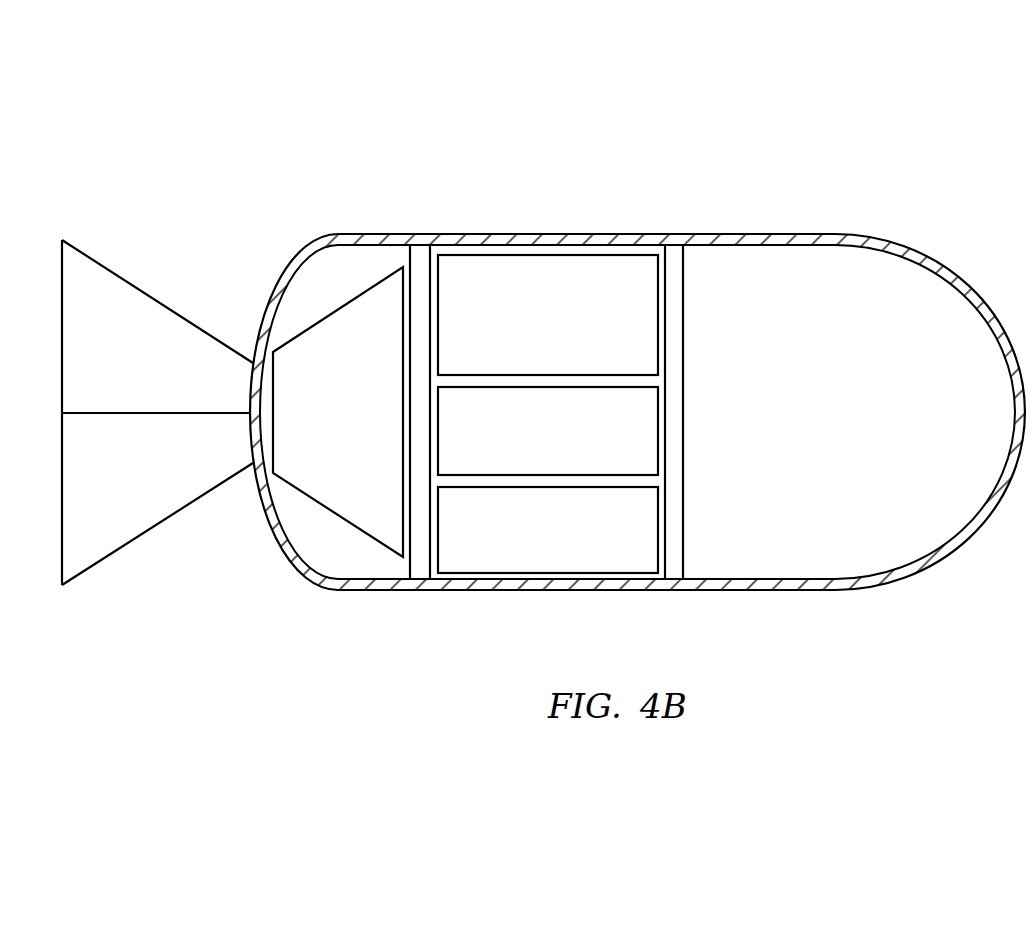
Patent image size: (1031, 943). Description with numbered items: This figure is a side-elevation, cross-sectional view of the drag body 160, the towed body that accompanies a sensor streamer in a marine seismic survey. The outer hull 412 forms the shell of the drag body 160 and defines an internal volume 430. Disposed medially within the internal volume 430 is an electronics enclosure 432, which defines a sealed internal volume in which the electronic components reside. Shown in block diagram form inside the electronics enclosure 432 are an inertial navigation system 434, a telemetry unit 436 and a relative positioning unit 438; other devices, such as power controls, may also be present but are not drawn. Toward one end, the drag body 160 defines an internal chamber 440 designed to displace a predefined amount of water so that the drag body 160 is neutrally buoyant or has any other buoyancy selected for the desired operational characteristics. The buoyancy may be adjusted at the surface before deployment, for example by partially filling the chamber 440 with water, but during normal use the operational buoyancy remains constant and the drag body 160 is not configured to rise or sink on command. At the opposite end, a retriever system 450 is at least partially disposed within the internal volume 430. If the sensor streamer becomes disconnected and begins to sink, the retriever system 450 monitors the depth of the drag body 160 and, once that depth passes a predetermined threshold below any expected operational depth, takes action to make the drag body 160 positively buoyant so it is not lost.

The drag body 160 is at (230, 121).
The outer hull 412 is at (837, 238).
The internal volume 430 is at (833, 555).
The electronics enclosure 432 is at (438, 480).
The inertial navigation system 434 is at (633, 302).
The telemetry unit 436 is at (638, 423).
The relative positioning unit 438 is at (642, 495).
The chamber 440 is at (915, 409).
The retriever system 450 is at (357, 456).